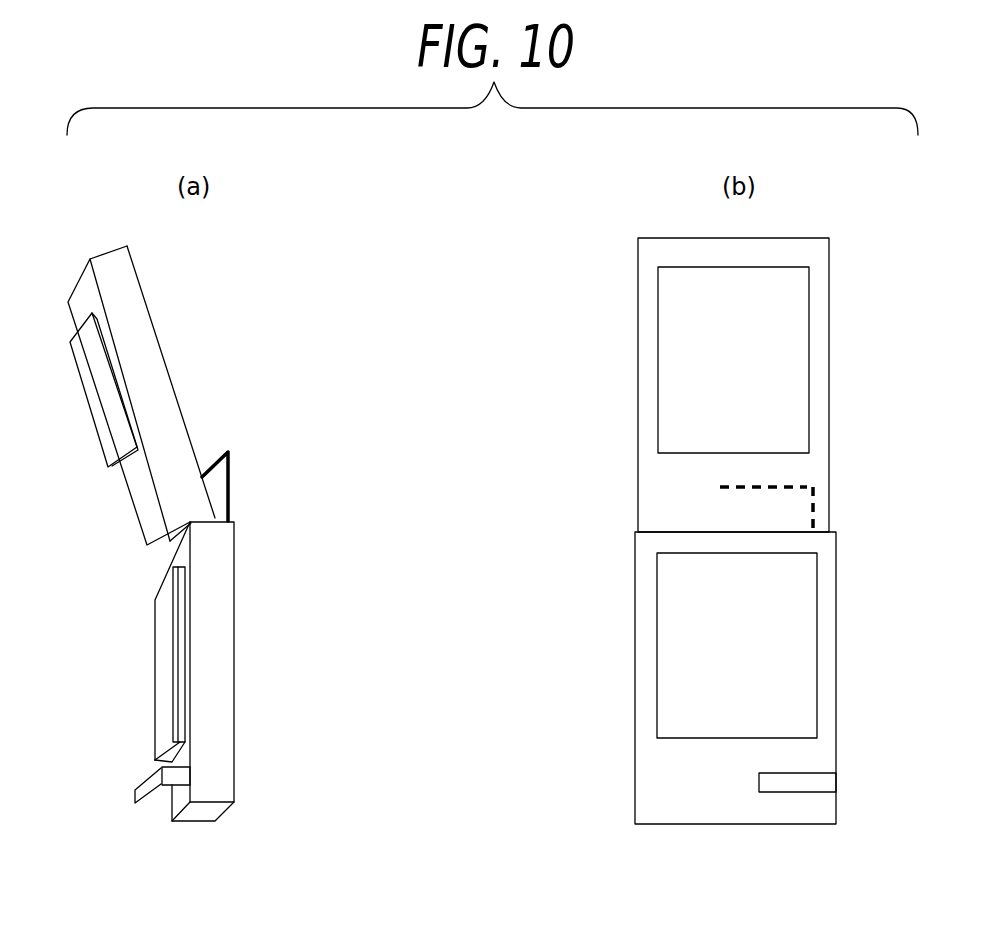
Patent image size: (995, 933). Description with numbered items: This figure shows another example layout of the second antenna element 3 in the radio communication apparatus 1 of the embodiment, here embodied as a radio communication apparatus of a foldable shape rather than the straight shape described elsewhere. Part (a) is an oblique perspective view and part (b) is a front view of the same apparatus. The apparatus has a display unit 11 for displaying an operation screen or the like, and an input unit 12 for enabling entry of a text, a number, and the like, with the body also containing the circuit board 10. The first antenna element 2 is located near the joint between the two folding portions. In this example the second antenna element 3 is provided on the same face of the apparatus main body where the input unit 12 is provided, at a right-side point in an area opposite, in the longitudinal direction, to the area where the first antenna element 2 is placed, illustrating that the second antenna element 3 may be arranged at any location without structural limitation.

The radio communication apparatus 1 is at (498, 558).
The first antenna element 2 is at (232, 470).
The second antenna element 3 is at (177, 778).
The circuit board 10 is at (222, 713).
The display unit 11 is at (95, 375).
The input unit 12 is at (167, 623).